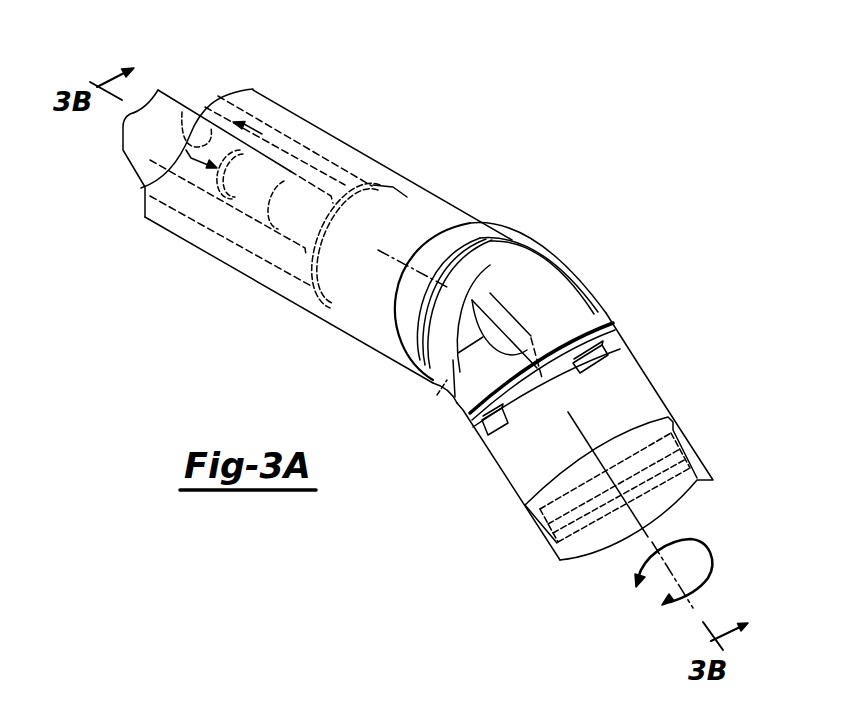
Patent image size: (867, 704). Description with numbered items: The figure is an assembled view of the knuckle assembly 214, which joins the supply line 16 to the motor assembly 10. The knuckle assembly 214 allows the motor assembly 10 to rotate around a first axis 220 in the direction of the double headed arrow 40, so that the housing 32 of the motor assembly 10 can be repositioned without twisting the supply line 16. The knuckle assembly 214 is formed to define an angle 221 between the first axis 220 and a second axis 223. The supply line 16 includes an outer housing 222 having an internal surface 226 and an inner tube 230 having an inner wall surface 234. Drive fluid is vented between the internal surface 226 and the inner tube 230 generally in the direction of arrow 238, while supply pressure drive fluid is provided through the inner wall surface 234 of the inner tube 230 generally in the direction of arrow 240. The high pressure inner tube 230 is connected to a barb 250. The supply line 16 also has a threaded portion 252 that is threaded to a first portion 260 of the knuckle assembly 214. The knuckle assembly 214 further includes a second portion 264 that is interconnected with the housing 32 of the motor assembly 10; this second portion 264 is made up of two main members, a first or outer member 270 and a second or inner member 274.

The motor assembly 10 is at (722, 512).
The supply line 16 is at (398, 160).
The housing 32 is at (697, 477).
The double headed arrow 40 is at (712, 577).
The knuckle assembly 214 is at (643, 257).
The first axis 220 is at (647, 542).
The angle 221 is at (437, 395).
The outer housing 222 is at (290, 120).
The second axis 223 is at (400, 258).
The internal surface 226 is at (325, 163).
The inner tube 230 is at (163, 107).
The inner wall surface 234 is at (187, 118).
The arrow 238 is at (258, 130).
The arrow 240 is at (141, 188).
The barb 250 is at (297, 217).
The threaded portion 252 is at (482, 233).
The first portion 260 is at (565, 254).
The second portion 264 is at (630, 330).
The first or outer member 270 is at (643, 388).
The second or inner member 274 is at (547, 492).